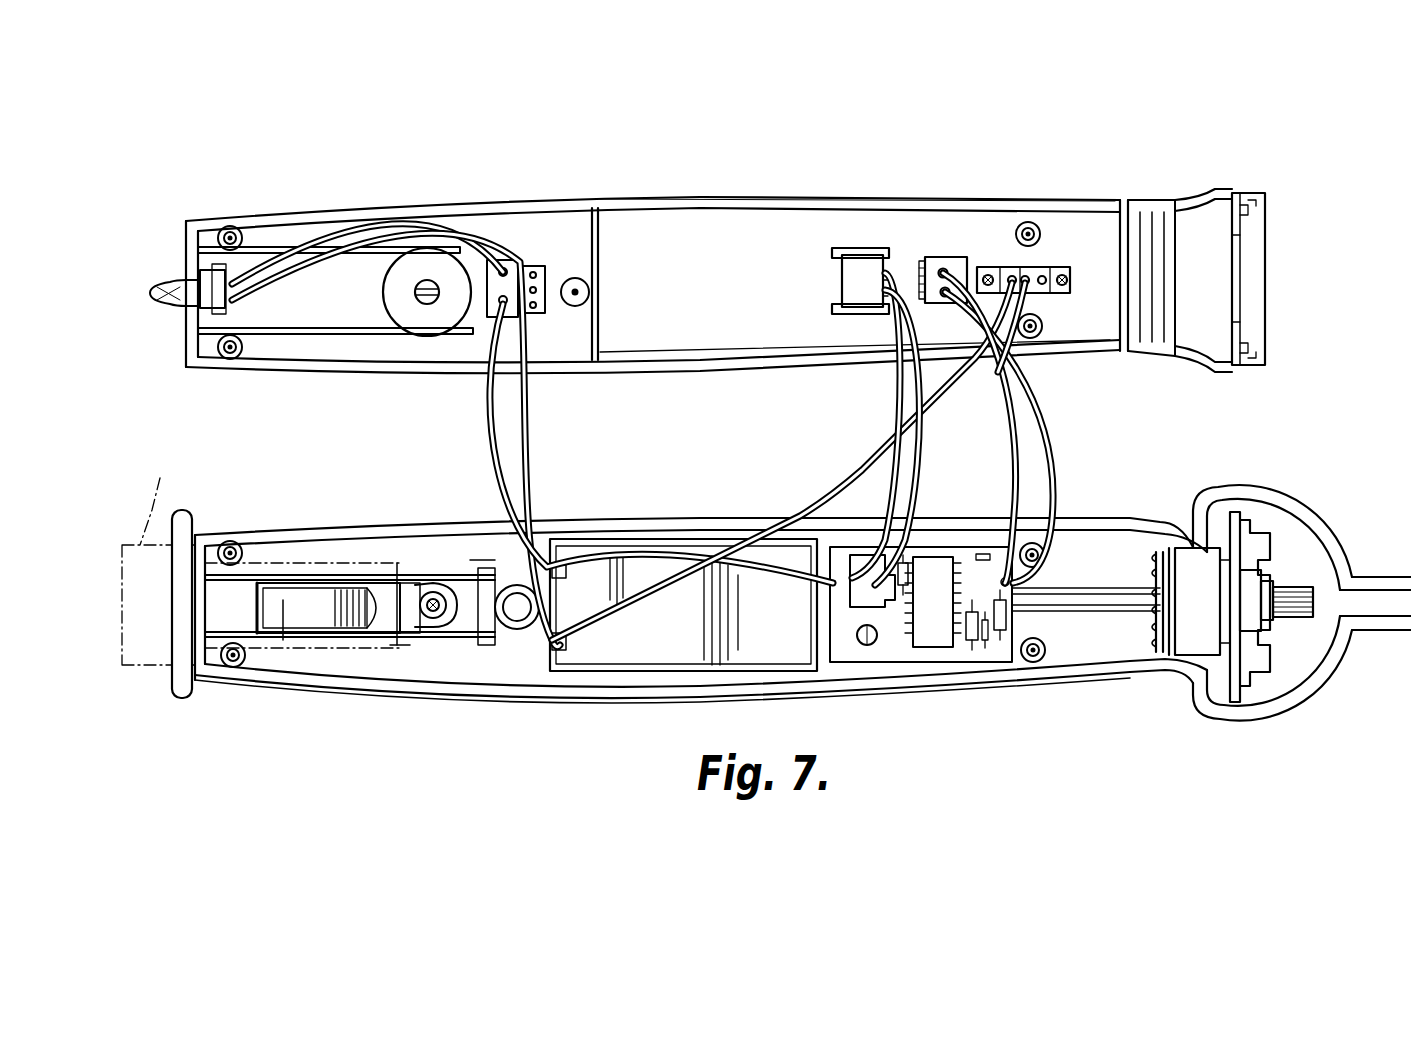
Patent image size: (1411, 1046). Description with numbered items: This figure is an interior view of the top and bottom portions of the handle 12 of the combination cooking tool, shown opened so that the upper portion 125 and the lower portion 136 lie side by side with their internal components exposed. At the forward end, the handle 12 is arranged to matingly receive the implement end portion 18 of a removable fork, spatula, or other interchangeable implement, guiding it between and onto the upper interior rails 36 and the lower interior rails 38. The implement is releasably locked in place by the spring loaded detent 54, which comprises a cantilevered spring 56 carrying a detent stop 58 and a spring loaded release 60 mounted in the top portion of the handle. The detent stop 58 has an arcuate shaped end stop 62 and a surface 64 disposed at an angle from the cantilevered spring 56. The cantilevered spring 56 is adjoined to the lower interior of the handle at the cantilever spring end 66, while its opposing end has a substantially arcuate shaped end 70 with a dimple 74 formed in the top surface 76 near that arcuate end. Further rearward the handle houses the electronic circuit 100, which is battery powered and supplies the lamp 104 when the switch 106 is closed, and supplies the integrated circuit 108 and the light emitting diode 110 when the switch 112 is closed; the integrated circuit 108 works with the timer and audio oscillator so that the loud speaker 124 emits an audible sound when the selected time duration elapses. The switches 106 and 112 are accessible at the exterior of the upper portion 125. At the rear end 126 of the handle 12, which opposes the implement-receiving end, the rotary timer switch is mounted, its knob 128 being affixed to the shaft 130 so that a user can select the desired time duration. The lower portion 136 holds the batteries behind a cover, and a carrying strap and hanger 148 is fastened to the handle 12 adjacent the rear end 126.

The handle 12 is at (712, 222).
The implement end portion 18 is at (156, 490).
The upper interior rails 36 is at (267, 250).
The lower interior rails 38 is at (213, 680).
The spring loaded detent 54 is at (368, 620).
The cantilevered spring 56 is at (460, 640).
The detent stop 58 is at (427, 642).
The spring loaded release 60 is at (424, 267).
The arcuate shaped end stop 62 is at (371, 585).
The surface 64 is at (330, 588).
The cantilever spring end 66 is at (285, 640).
The substantially arcuate shaped end 70 is at (483, 640).
The dimple 74 is at (433, 592).
The top surface 76 is at (455, 610).
The electronic circuit 100 is at (950, 665).
The lamp L1 104 is at (160, 278).
The switch S1 106 is at (538, 263).
The integrated circuit IC1 108 is at (937, 648).
The light emitting diode LED1 110 is at (950, 256).
The switch S2 112 is at (1052, 266).
The loud speaker LS1 124 is at (858, 260).
The upper portion 125 is at (765, 196).
The rear end 126 is at (1256, 296).
The knob 128 is at (1322, 545).
The shaft 130 is at (1297, 622).
The lower portion 136 is at (708, 520).
The carrying strap and hanger 148 is at (1408, 575).